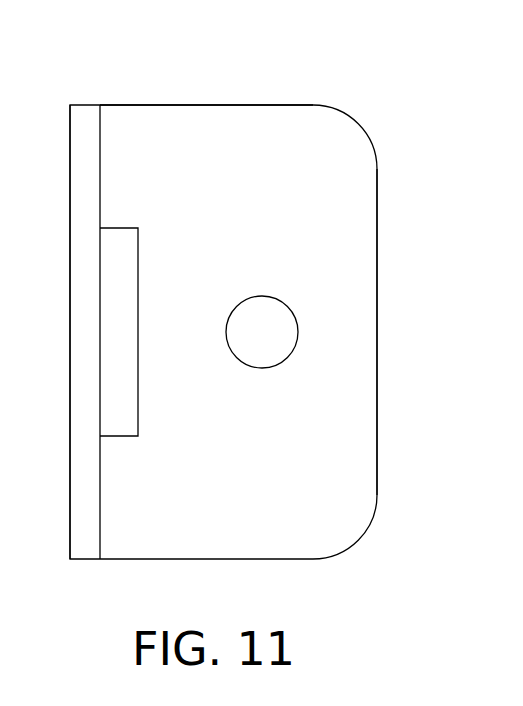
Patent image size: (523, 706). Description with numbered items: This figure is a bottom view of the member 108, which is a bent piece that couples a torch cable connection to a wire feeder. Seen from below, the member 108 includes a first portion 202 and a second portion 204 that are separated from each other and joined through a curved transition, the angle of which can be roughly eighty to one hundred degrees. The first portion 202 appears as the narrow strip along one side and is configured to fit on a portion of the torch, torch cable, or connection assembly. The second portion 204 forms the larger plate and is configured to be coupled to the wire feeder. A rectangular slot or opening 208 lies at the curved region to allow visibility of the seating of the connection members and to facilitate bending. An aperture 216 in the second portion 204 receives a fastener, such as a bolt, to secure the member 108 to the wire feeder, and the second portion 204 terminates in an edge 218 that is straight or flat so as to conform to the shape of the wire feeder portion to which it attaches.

The member 108 is at (323, 75).
The first portion 202 is at (79, 193).
The second portion 204 is at (242, 100).
The opening 208 is at (122, 292).
The aperture 216 is at (297, 320).
The edge 218 is at (377, 237).